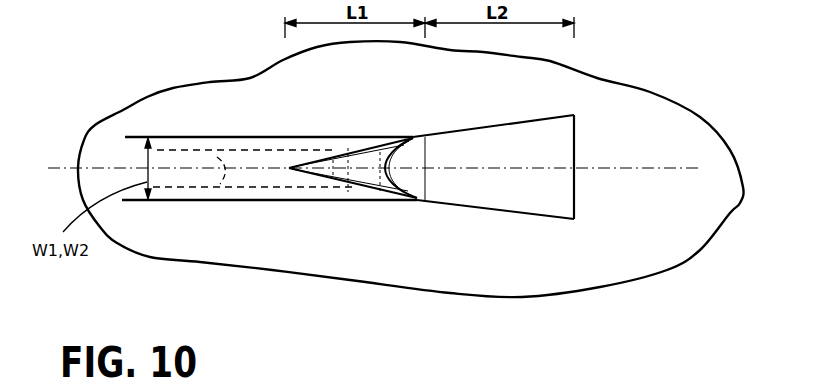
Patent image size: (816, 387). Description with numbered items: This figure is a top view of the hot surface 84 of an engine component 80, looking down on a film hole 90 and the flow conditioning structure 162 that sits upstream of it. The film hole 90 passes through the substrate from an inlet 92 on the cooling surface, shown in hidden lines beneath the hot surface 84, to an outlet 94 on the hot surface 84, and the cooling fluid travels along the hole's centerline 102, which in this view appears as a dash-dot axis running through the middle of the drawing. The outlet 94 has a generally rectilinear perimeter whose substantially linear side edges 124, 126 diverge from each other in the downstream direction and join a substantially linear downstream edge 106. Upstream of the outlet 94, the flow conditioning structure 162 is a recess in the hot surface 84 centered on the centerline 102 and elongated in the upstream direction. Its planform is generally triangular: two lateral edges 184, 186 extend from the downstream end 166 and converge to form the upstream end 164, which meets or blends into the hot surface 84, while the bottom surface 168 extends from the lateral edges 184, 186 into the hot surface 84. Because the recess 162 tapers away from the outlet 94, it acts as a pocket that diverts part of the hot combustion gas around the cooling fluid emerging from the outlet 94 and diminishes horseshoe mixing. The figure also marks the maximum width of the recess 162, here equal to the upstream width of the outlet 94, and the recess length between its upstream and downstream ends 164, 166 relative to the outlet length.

The engine component 80 is at (171, 110).
The hot surface 84 is at (232, 120).
The outlet 94 is at (538, 165).
The centerline 102 is at (58, 168).
The film hole 90 is at (247, 192).
The inlet 92 is at (174, 172).
The flow conditioning structure 162 is at (376, 138).
The upstream end 164 is at (290, 167).
The bottom surface 168 is at (357, 162).
The lateral edge 184 is at (365, 147).
The lateral edge 186 is at (365, 190).
The downstream end 166 is at (415, 158).
The side edge 124 is at (500, 125).
The downstream edge 106 is at (575, 125).
The side edge 126 is at (493, 211).